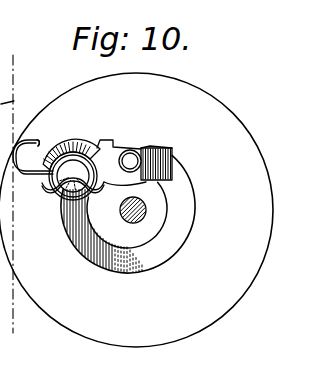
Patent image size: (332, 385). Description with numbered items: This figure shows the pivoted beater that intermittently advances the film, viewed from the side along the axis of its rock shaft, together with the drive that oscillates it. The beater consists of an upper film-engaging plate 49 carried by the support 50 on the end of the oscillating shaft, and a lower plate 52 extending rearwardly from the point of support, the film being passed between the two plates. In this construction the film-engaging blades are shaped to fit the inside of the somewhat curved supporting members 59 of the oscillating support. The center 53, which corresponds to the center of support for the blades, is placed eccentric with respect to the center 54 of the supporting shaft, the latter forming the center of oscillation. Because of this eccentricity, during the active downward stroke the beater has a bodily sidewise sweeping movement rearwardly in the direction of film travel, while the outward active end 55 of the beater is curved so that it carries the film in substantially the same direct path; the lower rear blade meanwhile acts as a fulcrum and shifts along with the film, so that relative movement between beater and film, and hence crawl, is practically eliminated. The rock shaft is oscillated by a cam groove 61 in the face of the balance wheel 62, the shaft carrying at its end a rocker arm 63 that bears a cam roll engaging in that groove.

The film-engaging plate 49 is at (30, 174).
The support 50 is at (118, 146).
The lower plate 52 is at (146, 182).
The center of support 53 is at (57, 210).
The center of the supporting shaft 54 is at (148, 148).
The outward active end 55 is at (38, 142).
The curved supporting members 59 is at (78, 143).
The cam groove 61 is at (158, 252).
The balance wheel 62 is at (240, 283).
The rocker arm 63 is at (104, 171).